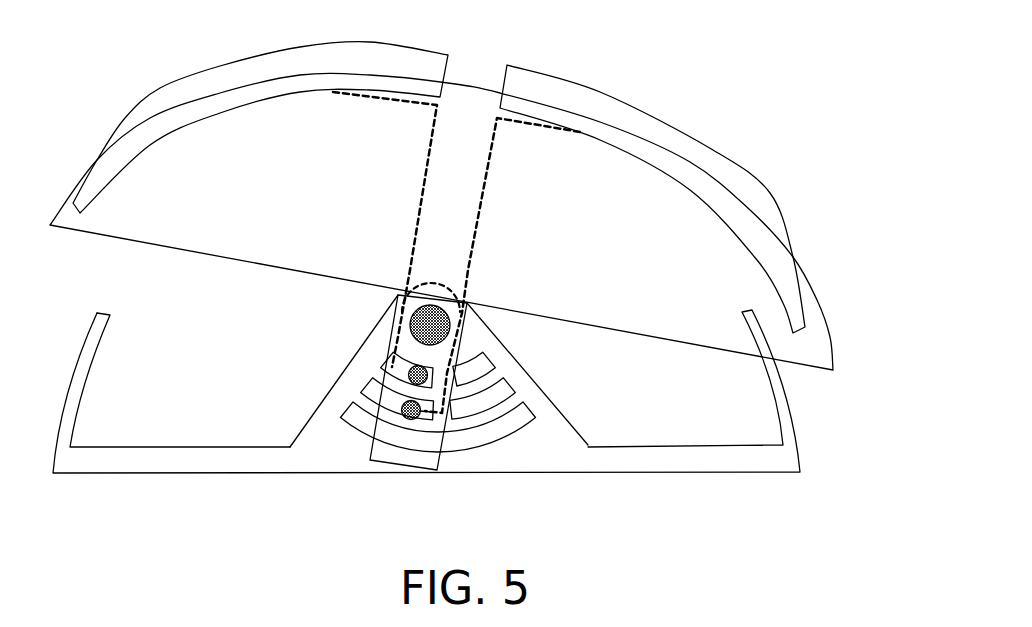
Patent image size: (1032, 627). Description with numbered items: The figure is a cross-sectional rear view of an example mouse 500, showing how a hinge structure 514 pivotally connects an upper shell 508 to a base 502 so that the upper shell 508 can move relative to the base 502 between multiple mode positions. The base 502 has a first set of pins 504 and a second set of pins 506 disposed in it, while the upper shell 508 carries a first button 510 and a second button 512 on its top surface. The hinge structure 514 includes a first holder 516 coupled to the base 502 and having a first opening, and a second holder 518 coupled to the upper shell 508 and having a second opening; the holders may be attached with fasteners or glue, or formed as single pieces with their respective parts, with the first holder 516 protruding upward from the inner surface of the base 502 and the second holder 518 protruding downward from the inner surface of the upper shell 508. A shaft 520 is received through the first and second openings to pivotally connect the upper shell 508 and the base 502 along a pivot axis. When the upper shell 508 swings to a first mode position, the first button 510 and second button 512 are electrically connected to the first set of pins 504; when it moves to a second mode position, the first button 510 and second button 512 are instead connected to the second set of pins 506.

The mouse 500 is at (661, 523).
The base 502 is at (800, 428).
The first set of pins 504 is at (377, 377).
The second set of pins 506 is at (487, 378).
The upper shell 508 is at (830, 342).
The first button 510 is at (157, 87).
The second button 512 is at (770, 193).
The hinge structure 514 is at (683, 275).
The first holder 516 is at (545, 415).
The second holder 518 is at (470, 312).
The shaft 520 is at (465, 303).